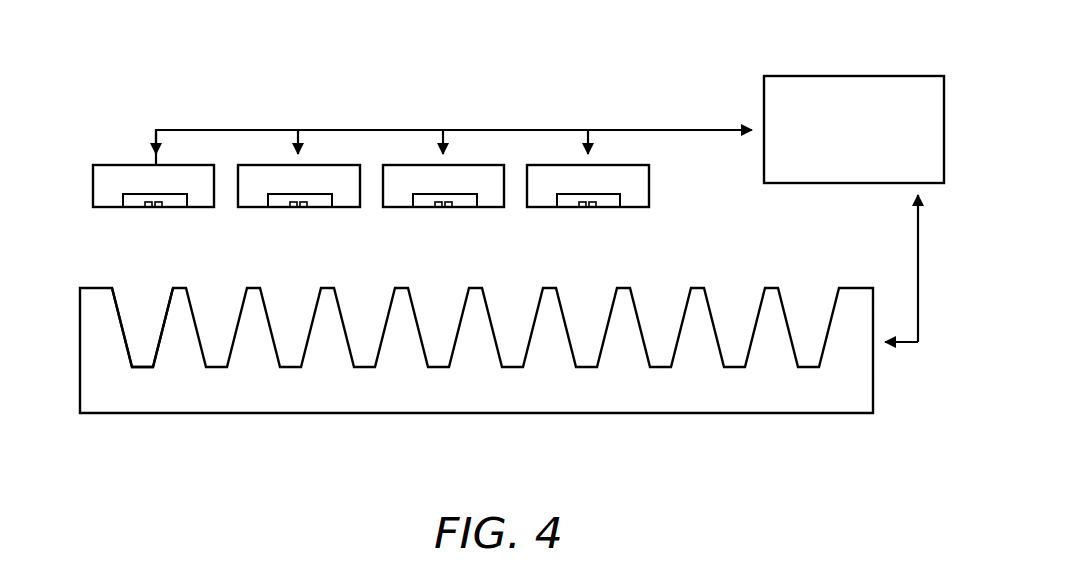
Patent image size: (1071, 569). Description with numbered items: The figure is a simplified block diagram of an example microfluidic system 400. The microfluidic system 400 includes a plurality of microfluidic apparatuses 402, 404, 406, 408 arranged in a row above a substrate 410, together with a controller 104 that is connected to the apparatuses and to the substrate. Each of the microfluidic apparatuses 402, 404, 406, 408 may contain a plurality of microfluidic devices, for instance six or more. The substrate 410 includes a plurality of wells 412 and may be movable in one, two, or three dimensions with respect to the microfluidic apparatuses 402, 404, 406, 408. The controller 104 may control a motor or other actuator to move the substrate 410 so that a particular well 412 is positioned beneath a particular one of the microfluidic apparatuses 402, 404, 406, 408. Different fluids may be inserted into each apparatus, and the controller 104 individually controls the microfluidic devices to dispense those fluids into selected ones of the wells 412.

The microfluidic system 400 is at (266, 68).
The microfluidic apparatus 402 is at (120, 165).
The microfluidic apparatus 404 is at (262, 165).
The microfluidic apparatus 406 is at (463, 165).
The microfluidic apparatus 408 is at (620, 165).
The controller 104 is at (874, 156).
The substrate 410 is at (120, 413).
The well 412 is at (144, 298).